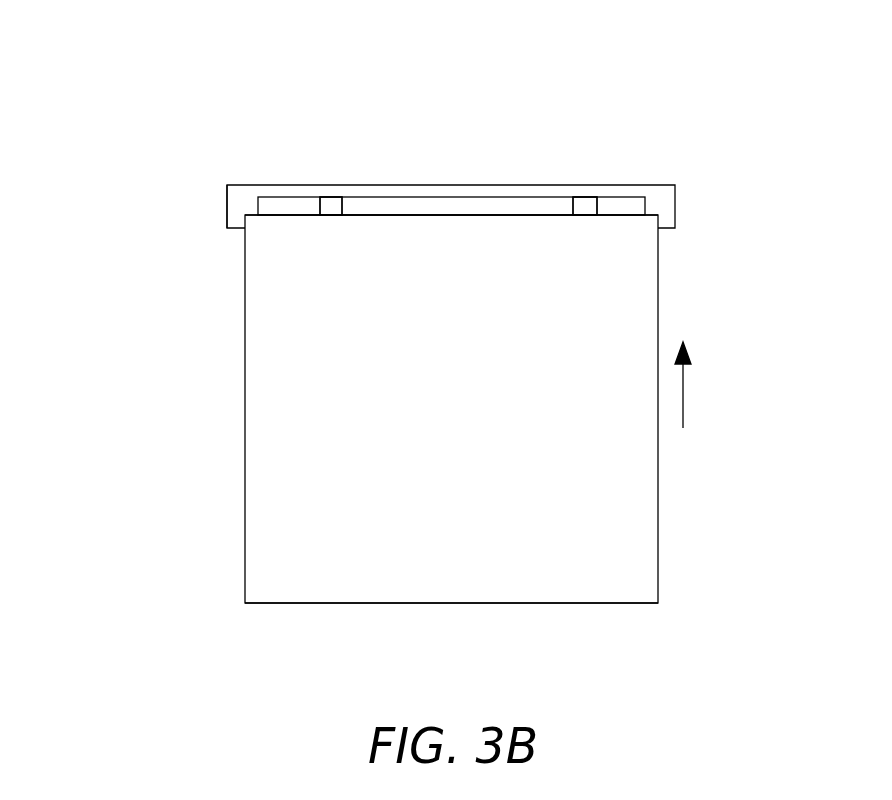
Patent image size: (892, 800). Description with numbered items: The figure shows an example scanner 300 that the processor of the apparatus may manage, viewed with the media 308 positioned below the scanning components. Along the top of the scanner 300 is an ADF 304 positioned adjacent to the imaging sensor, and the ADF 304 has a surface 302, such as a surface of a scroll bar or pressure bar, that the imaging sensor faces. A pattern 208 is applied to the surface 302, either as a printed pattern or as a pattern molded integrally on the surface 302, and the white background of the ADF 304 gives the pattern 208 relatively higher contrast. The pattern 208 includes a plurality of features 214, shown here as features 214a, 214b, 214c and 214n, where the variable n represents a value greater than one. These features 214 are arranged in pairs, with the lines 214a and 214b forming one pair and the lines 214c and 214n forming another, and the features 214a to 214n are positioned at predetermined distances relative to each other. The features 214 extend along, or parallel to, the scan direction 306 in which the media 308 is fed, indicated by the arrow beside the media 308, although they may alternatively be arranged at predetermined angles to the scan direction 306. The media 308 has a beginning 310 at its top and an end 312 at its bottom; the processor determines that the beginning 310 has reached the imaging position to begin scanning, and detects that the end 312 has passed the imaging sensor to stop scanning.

The scanner 300 is at (100, 84).
The surface 302 is at (238, 212).
The ADF 304 is at (236, 206).
The pattern 208 is at (256, 199).
The features 214 is at (458, 121).
The feature 214a is at (320, 208).
The feature 214b is at (342, 208).
The feature 214c is at (573, 207).
The feature 214n is at (628, 169).
The scan direction 306 is at (684, 390).
The media 308 is at (470, 436).
The beginning of the media 310 is at (432, 216).
The end of the media 312 is at (405, 605).